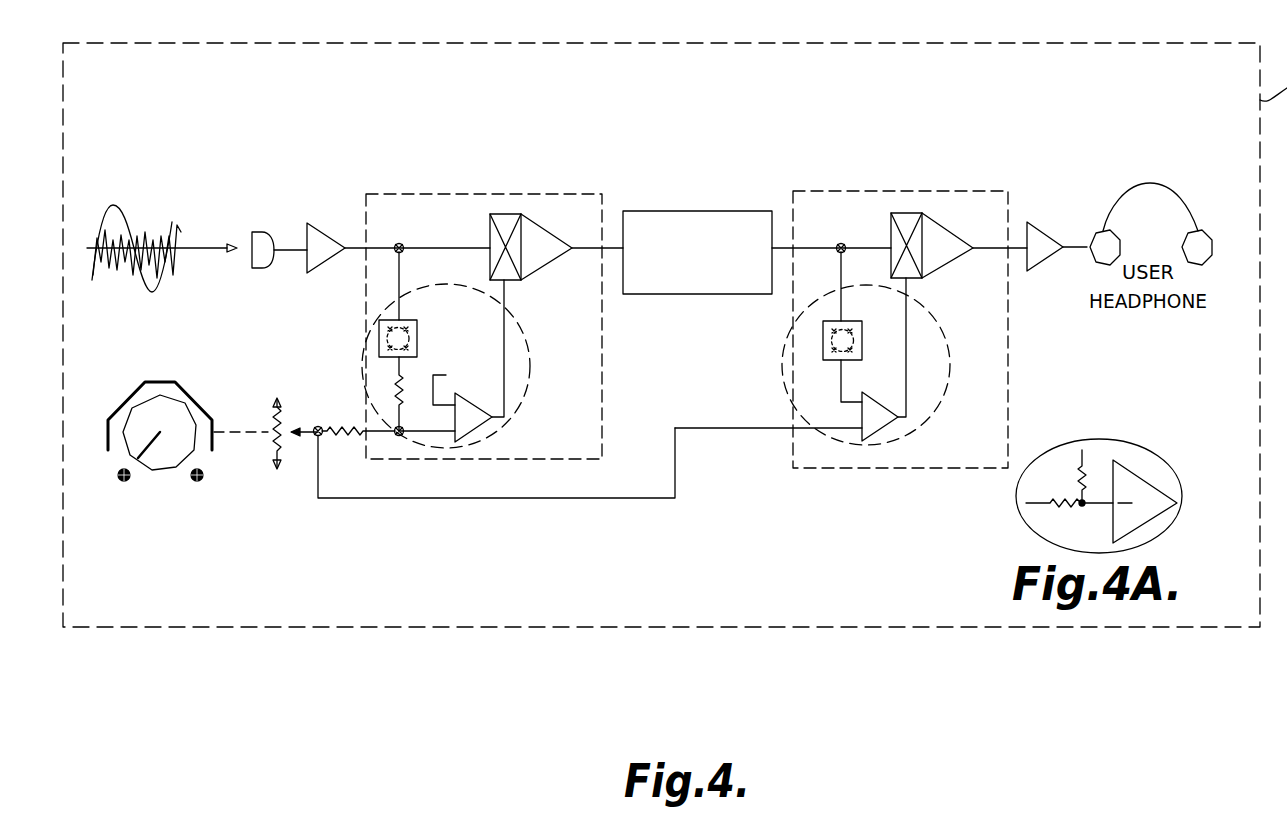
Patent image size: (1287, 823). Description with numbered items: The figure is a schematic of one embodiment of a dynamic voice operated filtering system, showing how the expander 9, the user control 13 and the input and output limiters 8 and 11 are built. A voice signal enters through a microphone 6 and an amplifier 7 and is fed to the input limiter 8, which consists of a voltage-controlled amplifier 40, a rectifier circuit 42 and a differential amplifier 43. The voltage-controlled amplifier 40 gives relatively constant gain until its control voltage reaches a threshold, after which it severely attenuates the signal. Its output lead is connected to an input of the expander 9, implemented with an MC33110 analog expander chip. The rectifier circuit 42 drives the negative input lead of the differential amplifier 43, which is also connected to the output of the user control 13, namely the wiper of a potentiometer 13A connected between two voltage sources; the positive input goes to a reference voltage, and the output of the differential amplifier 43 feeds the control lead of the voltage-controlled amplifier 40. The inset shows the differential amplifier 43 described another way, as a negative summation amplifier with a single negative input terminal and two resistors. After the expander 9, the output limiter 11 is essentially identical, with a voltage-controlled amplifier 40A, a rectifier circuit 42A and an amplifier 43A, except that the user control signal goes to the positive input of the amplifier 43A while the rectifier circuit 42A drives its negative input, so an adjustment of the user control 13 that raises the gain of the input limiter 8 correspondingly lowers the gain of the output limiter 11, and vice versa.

In FIG. 4, the microphone 6 is at (252, 234).
In FIG. 4, the amplifier 7 is at (316, 226).
In FIG. 4, the input limiter 8 is at (445, 194).
In FIG. 4, the expander 9 is at (691, 211).
In FIG. 4, the output limiter 11 is at (880, 191).
In FIG. 4, the user control 13 is at (153, 396).
In FIG. 4, the potentiometer 13A is at (283, 492).
In FIG. 4, the voltage-controlled amplifier 40 is at (548, 264).
In FIG. 4, the voltage-controlled amplifier 40A is at (947, 262).
In FIG. 4, the rectifier circuit 42 is at (379, 338).
In FIG. 4, the rectifier circuit 42A is at (823, 338).
In FIG. 4, the differential amplifier 43 is at (474, 430).
In FIG. 4A, the differential amplifier 43 is at (1135, 440).
In FIG. 4, the differential amplifier 43A is at (878, 436).